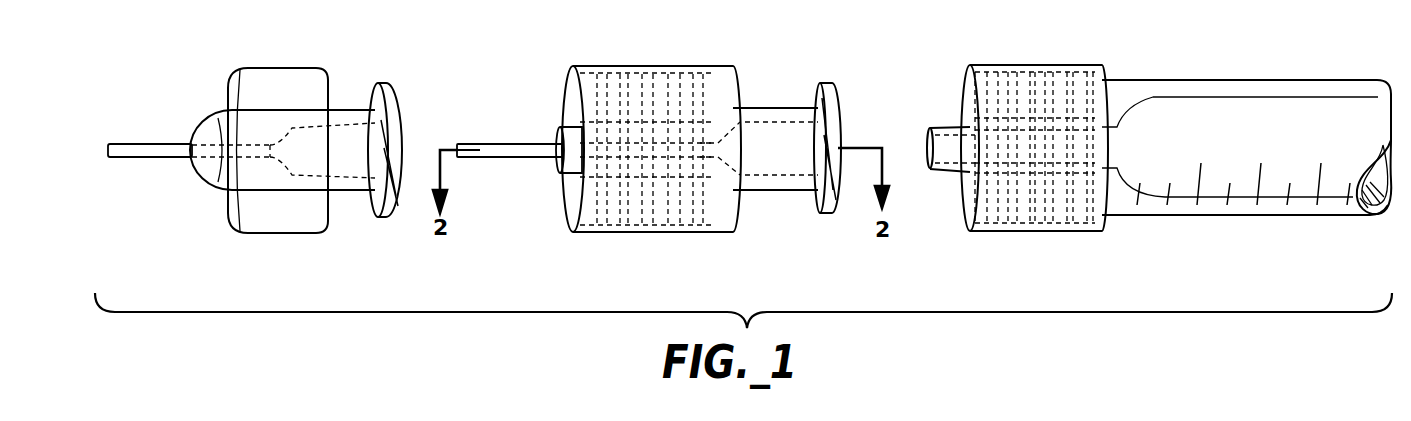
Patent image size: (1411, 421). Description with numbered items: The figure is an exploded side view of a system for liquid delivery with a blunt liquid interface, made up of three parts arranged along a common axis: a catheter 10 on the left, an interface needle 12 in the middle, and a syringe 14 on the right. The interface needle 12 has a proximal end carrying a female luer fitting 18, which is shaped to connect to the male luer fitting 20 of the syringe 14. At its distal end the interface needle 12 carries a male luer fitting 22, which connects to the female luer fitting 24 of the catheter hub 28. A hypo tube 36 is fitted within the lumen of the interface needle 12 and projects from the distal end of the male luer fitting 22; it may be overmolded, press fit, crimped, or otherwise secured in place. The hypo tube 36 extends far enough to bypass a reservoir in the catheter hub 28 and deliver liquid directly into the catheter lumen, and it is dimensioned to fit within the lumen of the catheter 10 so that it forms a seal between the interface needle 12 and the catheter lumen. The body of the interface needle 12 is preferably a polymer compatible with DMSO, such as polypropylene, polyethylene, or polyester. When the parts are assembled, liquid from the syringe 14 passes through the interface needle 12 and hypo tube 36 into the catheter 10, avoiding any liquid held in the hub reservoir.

The catheter 10 is at (208, 245).
The interface needle 12 is at (600, 245).
The syringe 14 is at (1235, 248).
The female luer fitting 18 is at (828, 83).
The male luer fitting 20 is at (1012, 66).
The male luer fitting 22 is at (627, 67).
The female luer fitting 24 is at (384, 85).
The catheter hub 28 is at (229, 80).
The hypo tube 36 is at (353, 180).